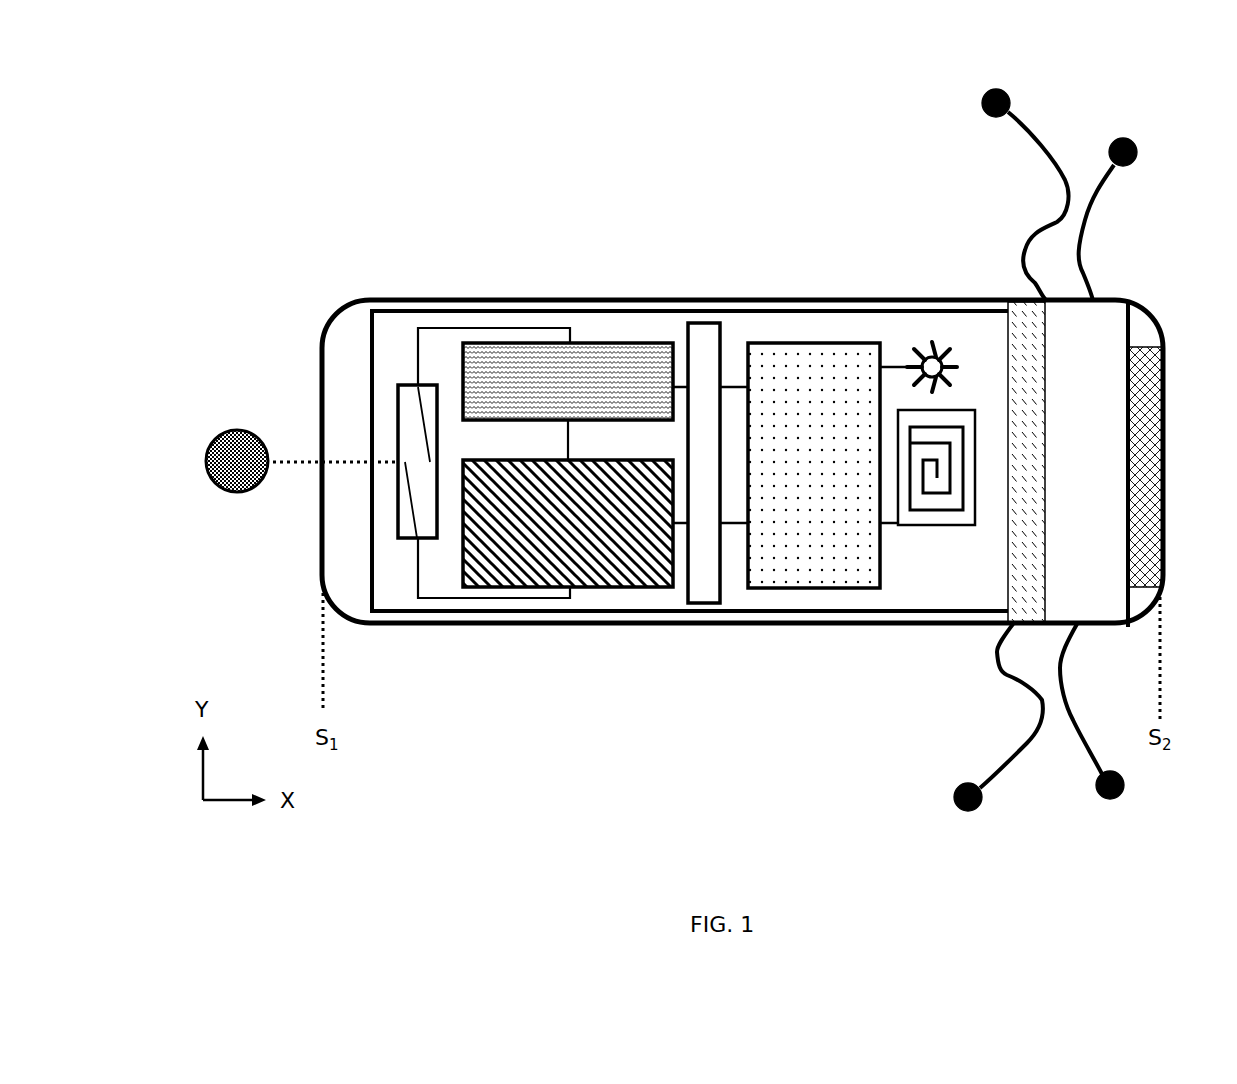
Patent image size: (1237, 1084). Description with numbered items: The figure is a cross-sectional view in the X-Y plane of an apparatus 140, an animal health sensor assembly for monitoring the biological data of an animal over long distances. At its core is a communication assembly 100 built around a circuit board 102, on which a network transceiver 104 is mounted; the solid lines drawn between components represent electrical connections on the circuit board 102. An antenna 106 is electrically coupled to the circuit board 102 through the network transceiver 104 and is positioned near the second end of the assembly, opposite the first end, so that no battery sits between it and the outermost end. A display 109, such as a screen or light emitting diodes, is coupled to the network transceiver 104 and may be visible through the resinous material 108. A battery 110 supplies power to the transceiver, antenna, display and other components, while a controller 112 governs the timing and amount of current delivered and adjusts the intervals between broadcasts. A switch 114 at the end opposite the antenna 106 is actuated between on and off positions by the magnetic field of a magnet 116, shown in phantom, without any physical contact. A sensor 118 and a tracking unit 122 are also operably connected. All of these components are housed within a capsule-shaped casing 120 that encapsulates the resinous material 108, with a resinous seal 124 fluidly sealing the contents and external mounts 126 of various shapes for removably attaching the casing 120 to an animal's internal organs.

The communication assembly 100 is at (840, 593).
The circuit board 102 is at (765, 602).
The network transceiver 104 is at (823, 377).
The antenna 106 is at (940, 535).
The resinous material 108 is at (1095, 463).
The display 109 is at (938, 348).
The battery 110 is at (637, 565).
The controller 112 is at (707, 345).
The switch 114 is at (403, 522).
The magnet 116 is at (248, 428).
The sensor 118 is at (635, 363).
The casing 120 is at (573, 297).
The tracking unit 122 is at (1022, 592).
The resinous seal 124 is at (1147, 380).
The external mounts 126 is at (988, 117).
The apparatus 140 is at (717, 464).